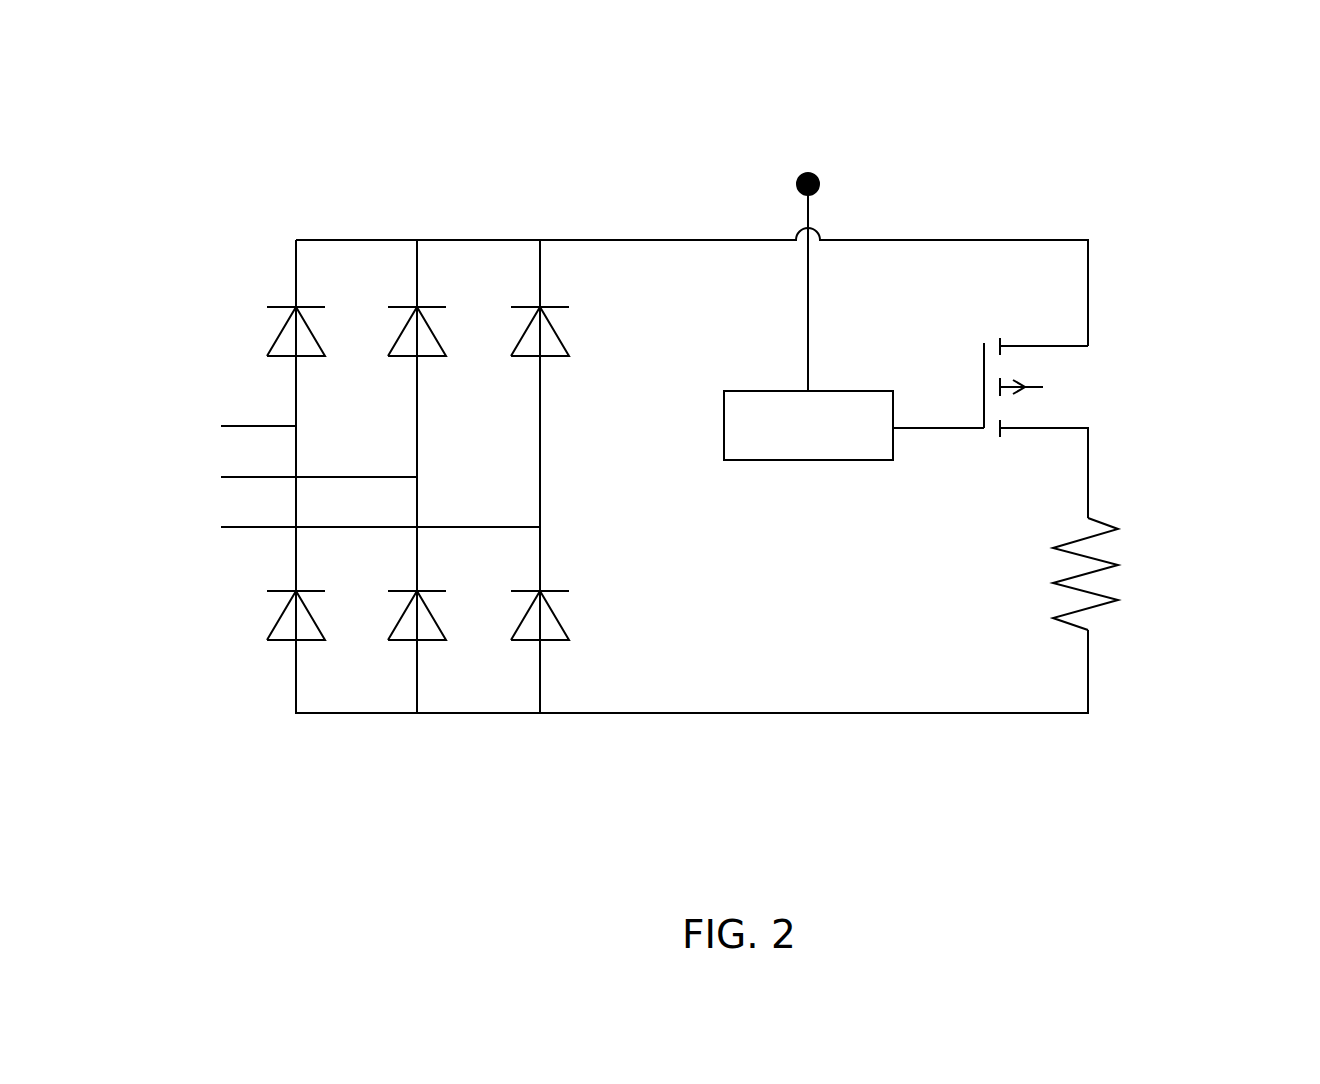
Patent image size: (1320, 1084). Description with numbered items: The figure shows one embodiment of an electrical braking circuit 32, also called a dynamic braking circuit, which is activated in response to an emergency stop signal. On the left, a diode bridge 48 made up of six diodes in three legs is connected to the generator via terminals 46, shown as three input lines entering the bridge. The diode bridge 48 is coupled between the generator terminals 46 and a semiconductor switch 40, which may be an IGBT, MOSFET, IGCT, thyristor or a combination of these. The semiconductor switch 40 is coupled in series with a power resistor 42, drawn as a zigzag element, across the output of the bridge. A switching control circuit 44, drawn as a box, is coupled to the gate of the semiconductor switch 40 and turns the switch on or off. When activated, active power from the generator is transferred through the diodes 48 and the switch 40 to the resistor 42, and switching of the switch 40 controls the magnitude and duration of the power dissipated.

The electrical braking circuit 32 is at (1192, 110).
The semiconductor switch 40 is at (1047, 378).
The power resistor 42 is at (1103, 560).
The switching control circuit 44 is at (808, 460).
The terminals 46 is at (215, 446).
The diode bridge 48 is at (322, 318).